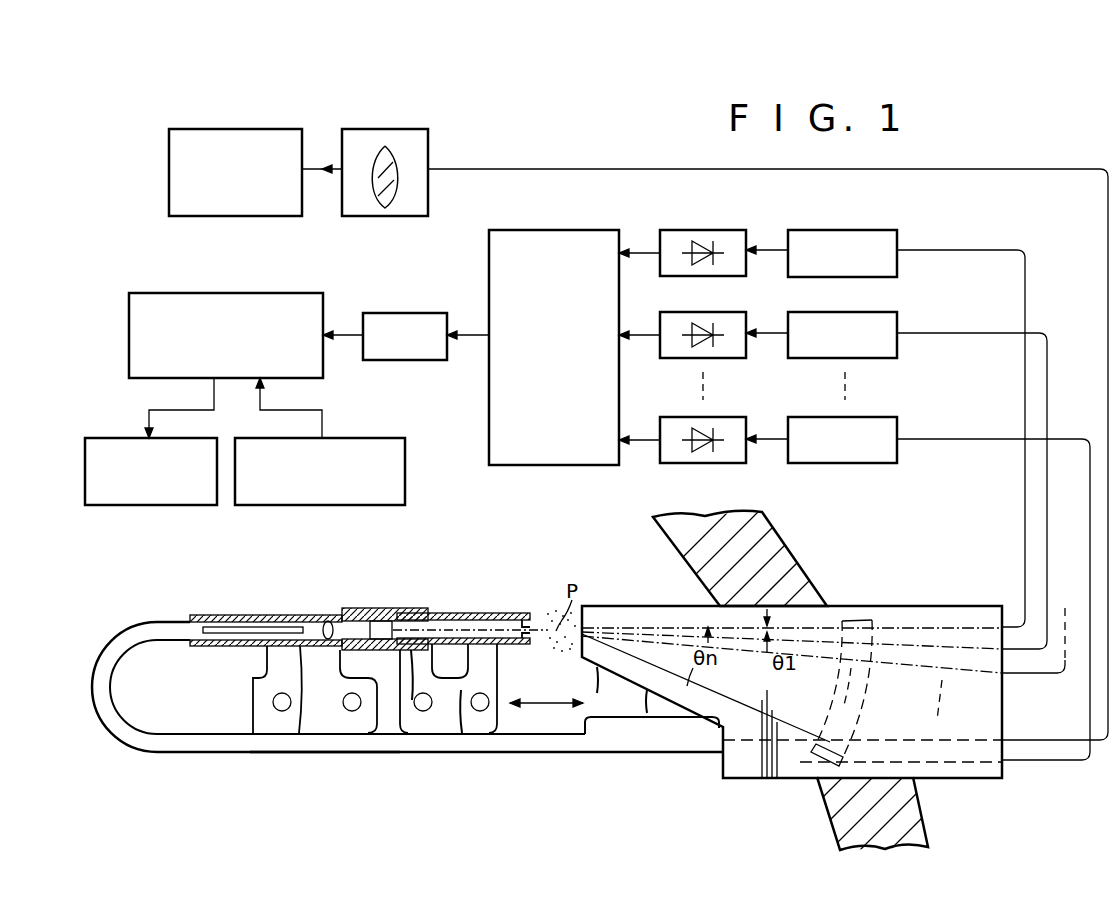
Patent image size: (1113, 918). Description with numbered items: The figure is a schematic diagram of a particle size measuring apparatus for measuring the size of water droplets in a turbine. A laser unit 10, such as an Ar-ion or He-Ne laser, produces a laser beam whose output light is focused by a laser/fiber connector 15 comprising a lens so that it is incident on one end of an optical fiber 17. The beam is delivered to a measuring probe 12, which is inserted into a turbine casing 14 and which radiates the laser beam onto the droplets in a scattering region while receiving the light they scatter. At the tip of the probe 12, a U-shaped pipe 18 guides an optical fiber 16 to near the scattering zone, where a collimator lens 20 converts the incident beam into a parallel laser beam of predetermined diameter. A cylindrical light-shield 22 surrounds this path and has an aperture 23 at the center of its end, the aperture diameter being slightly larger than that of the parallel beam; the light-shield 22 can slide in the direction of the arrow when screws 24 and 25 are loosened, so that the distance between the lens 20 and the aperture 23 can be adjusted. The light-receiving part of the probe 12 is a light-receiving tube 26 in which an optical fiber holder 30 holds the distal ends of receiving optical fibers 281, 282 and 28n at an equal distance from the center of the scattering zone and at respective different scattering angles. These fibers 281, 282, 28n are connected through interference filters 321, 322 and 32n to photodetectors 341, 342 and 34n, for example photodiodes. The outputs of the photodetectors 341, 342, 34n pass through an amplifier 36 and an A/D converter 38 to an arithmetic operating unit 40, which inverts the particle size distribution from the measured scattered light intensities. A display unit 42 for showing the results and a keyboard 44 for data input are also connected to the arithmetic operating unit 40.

The laser unit 10 is at (285, 129).
The laser/fiber connector 15 is at (412, 129).
The optical fiber 17 is at (541, 169).
The amplifier 36 is at (596, 230).
The photodetector 341 is at (712, 230).
The photodetector 342 is at (714, 312).
The photodetector 34n is at (717, 417).
The interference filter 321 is at (868, 230).
The interference filter 322 is at (870, 312).
The interference filter 32n is at (868, 417).
The optical fiber 281 is at (1024, 541).
The optical fiber 282 is at (1047, 384).
The optical fiber 28n is at (944, 440).
The A/D converter 38 is at (432, 313).
The arithmetic operating unit 40 is at (300, 293).
The display unit 42 is at (190, 505).
The keyboard 44 is at (384, 505).
The measuring probe 12 is at (576, 753).
The turbine casing 14 is at (798, 558).
The optical fiber 16 is at (246, 628).
The U-shaped pipe 18 is at (318, 752).
The collimator lens 20 is at (324, 636).
The cylindrical light-shield 22 is at (452, 613).
The aperture 23 is at (524, 624).
The screw 24 is at (424, 712).
The screw 25 is at (483, 712).
The light-receiving tube 26 is at (632, 606).
The optical fiber holder 30 is at (859, 618).